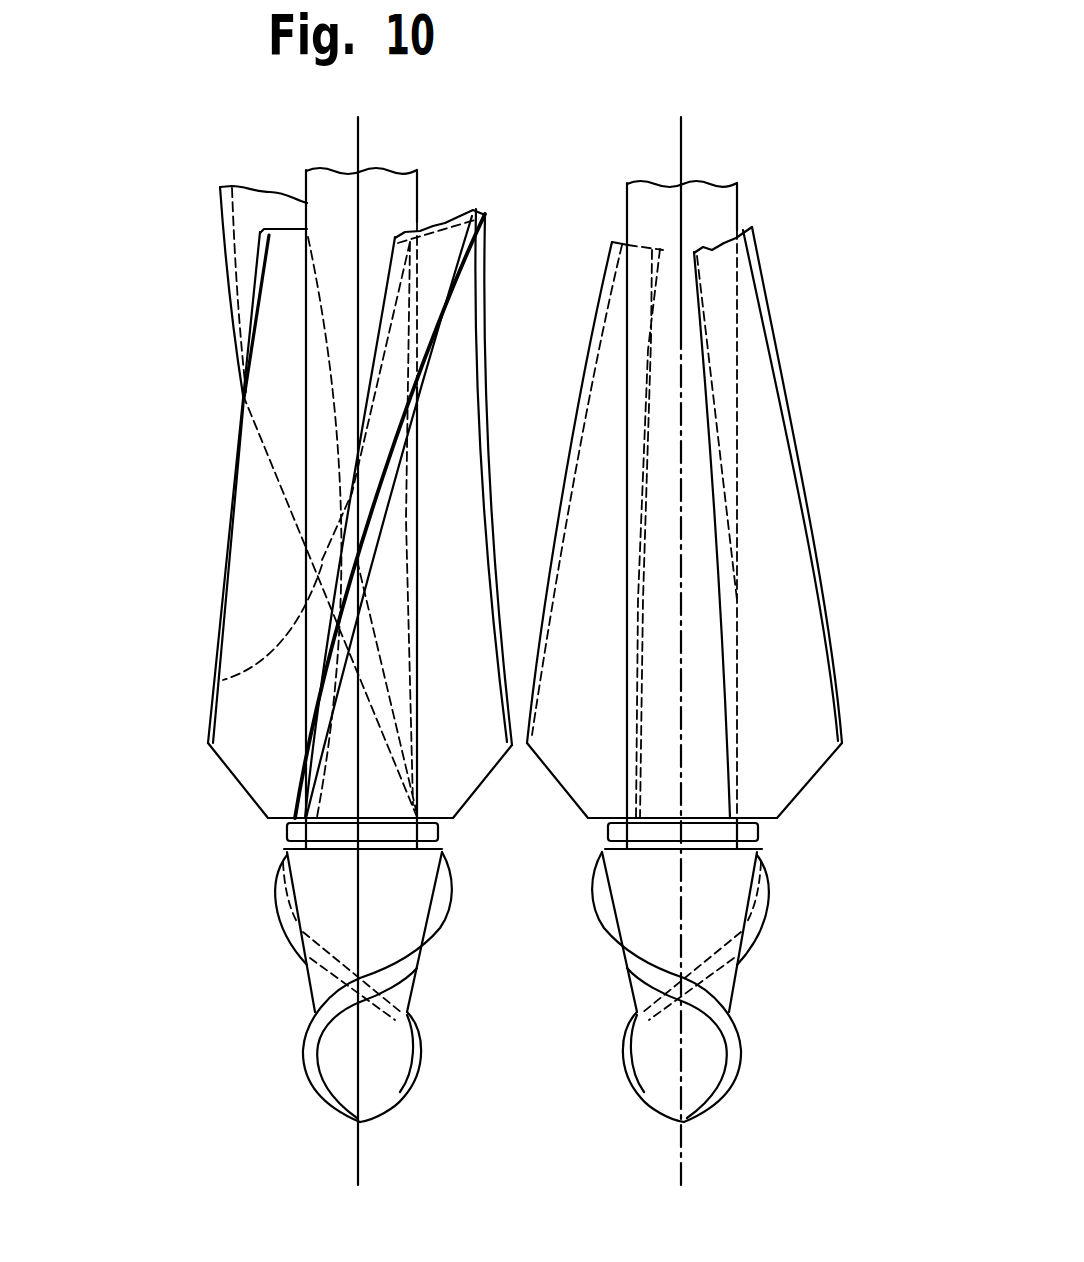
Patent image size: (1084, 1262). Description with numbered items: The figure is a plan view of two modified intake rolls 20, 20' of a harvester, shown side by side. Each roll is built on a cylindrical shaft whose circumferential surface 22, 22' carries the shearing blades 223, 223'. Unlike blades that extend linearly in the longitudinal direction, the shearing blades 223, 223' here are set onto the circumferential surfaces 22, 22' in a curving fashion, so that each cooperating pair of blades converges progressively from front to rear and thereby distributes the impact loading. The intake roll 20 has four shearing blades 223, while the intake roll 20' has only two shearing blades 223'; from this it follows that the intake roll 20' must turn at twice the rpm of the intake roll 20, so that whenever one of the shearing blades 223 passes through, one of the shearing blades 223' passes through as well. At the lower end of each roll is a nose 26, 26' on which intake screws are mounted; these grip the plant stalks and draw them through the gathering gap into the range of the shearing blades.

The intake roll 20 is at (319, 529).
The circumferential surface 22 is at (361, 474).
The shearing blade 223 is at (293, 502).
The nose 26 is at (335, 987).
The intake roll 20' is at (728, 594).
The circumferential surface 22' is at (724, 499).
The shearing blade 223' is at (745, 522).
The nose 26' is at (720, 987).